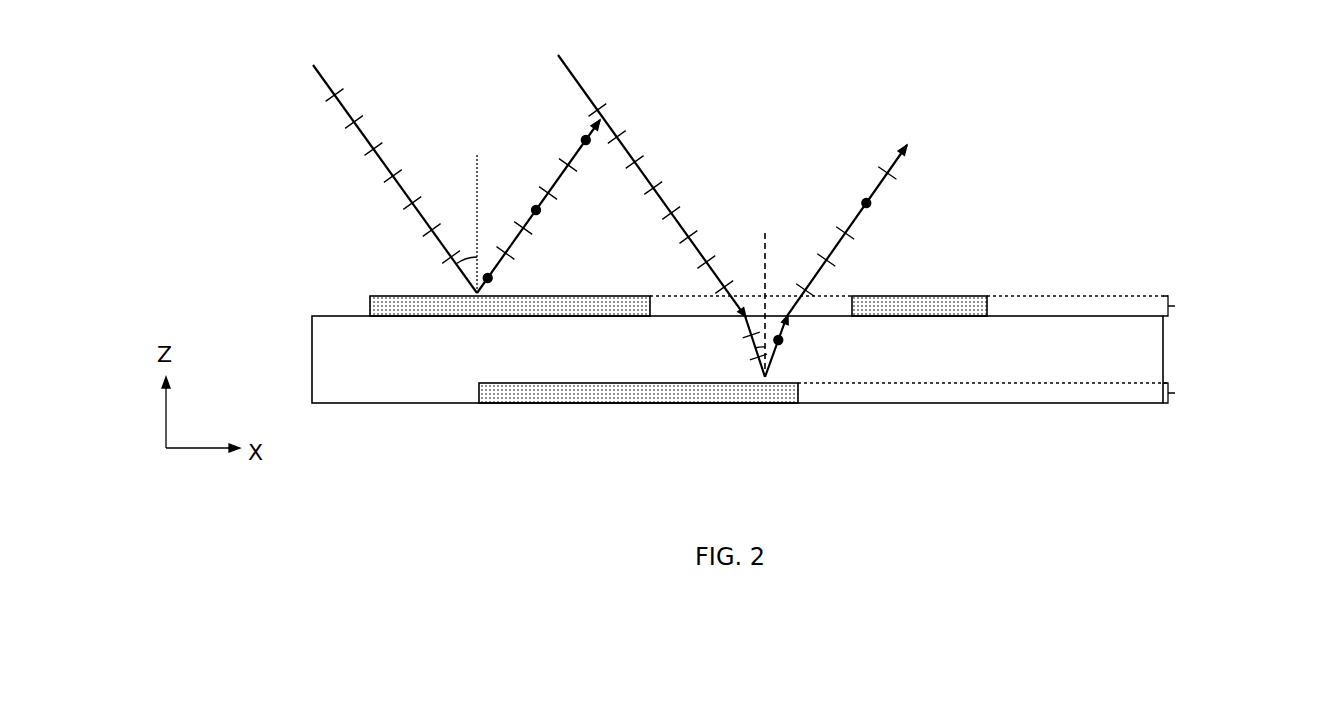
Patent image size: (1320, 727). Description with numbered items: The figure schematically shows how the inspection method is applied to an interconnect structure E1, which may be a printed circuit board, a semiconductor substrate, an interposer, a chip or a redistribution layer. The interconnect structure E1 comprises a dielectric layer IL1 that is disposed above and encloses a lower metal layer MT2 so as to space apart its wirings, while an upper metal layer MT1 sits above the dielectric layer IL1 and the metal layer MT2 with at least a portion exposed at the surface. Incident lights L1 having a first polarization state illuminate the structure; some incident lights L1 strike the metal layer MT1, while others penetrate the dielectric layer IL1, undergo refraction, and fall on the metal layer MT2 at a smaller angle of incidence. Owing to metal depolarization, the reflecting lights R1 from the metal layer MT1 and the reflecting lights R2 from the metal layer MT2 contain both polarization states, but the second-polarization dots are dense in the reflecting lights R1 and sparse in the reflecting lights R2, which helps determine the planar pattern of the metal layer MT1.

The incident lights L1 is at (540, 216).
The reflecting lights R1 is at (538, 206).
The reflecting lights R2 is at (836, 261).
The interconnect structure E1 is at (341, 280).
The dielectric layer IL1 is at (325, 355).
The metal layer MT1 is at (800, 305).
The metal layer MT2 is at (855, 393).